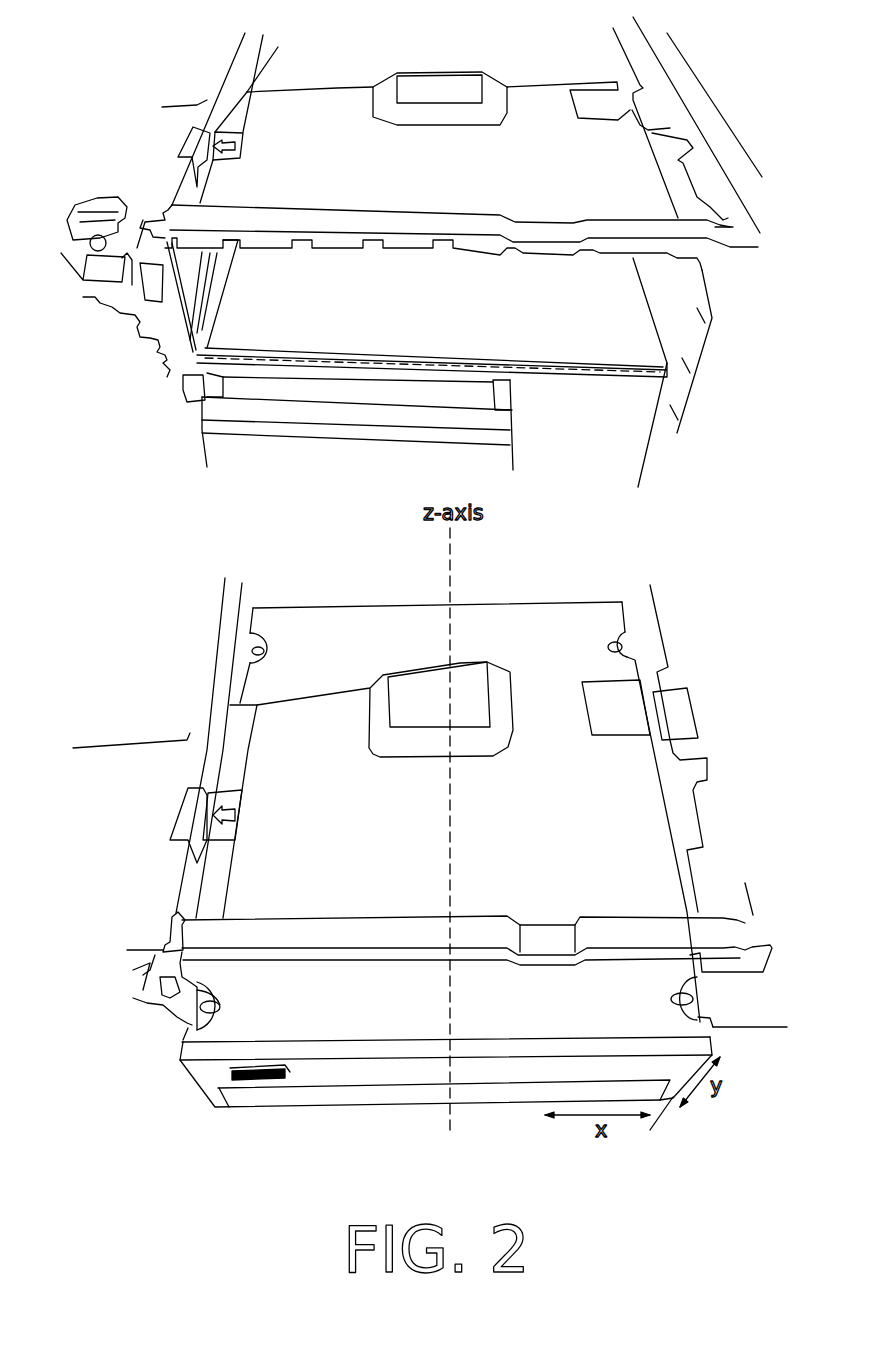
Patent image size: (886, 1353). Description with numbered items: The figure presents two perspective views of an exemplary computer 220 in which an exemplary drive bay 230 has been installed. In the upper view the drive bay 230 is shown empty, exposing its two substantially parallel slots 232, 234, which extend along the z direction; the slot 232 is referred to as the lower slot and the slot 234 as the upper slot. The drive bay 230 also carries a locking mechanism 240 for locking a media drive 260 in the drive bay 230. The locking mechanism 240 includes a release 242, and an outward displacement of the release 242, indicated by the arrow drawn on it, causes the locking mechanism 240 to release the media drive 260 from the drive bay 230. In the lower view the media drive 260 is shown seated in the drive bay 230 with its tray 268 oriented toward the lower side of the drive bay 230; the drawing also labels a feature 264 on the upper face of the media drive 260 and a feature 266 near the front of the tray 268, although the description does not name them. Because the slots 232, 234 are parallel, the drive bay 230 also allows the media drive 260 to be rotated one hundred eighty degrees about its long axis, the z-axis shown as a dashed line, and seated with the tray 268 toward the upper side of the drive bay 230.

The computer 220 is at (207, 35).
The drive bay 230 is at (342, 88).
The locking mechanism 240 is at (243, 137).
The release 242 is at (240, 812).
The upper slot 234 is at (205, 267).
The lower slot 232 is at (207, 300).
The media drive 260 is at (508, 590).
The top surface 264 is at (402, 608).
The vent slot 266 is at (233, 1073).
The tray 268 is at (412, 1095).